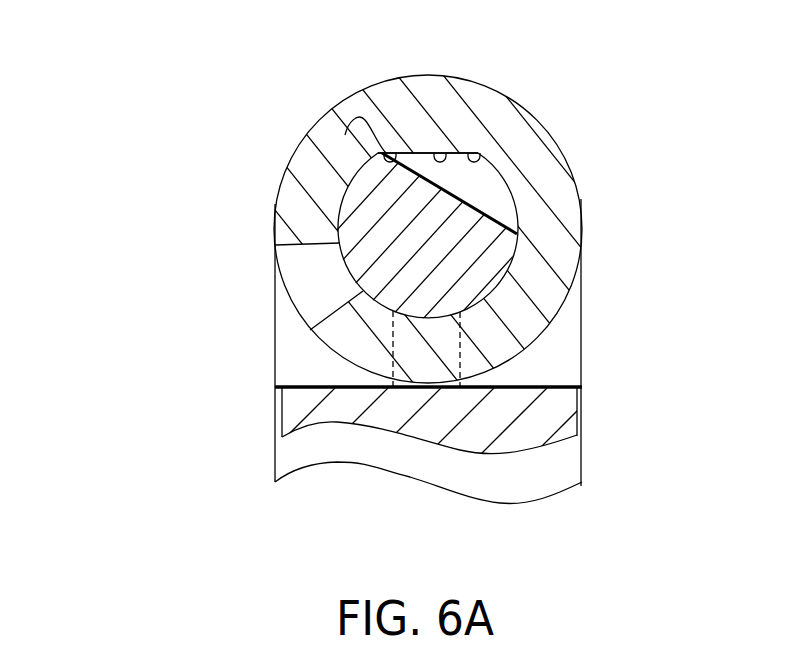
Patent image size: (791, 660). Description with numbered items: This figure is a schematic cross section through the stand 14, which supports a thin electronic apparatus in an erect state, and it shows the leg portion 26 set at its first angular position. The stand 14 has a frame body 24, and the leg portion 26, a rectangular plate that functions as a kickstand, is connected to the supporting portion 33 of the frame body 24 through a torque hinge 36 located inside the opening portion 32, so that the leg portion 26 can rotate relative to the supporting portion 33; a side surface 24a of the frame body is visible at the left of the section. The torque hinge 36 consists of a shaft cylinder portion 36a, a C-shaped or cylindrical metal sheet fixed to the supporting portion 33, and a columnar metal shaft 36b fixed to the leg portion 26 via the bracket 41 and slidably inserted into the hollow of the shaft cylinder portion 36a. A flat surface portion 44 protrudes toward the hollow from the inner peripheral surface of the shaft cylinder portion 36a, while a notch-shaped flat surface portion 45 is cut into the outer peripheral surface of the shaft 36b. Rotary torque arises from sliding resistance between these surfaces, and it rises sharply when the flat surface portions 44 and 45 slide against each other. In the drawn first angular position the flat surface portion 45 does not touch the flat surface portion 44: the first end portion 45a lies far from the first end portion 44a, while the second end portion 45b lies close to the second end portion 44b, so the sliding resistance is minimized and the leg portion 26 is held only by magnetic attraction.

The stand 14 is at (84, 44).
The frame body 24 is at (432, 285).
The supporting portion 33 is at (432, 285).
The side surface of base member 24a is at (275, 457).
The leg portion 26 is at (552, 448).
The opening portion 32 is at (562, 362).
The torque hinge 36 is at (452, 230).
The shaft cylinder portion 36a is at (548, 193).
The shaft 36b is at (495, 252).
The bracket 41 is at (400, 340).
The flat surface portion 44 is at (507, 88).
The first end portion 44a is at (482, 157).
The second end portion 44b is at (405, 153).
The flat surface portion 45 is at (469, 188).
The first end portion 45a is at (517, 234).
The second end portion 45b is at (345, 134).